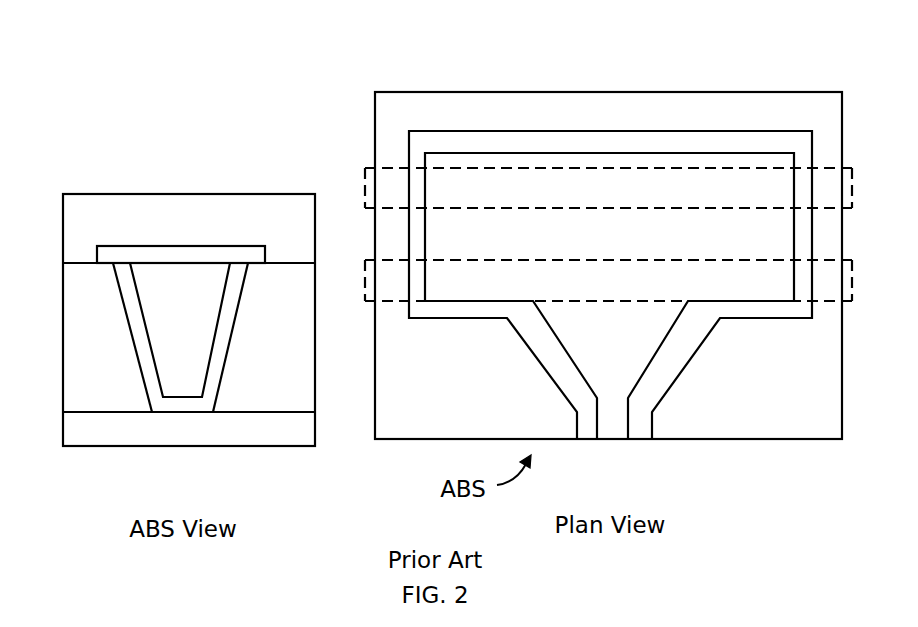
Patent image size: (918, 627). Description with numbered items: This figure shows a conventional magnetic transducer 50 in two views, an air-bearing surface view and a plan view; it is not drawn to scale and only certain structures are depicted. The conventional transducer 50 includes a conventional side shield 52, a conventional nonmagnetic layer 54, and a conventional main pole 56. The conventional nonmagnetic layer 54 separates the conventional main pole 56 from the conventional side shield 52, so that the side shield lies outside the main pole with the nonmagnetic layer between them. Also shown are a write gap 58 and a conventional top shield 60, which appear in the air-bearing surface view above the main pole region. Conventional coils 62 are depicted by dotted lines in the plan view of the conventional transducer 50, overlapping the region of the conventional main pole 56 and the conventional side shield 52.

The conventional magnetic transducer 50 is at (445, 36).
The conventional side shield 52 is at (263, 413).
The conventional nonmagnetic layer 54 is at (122, 302).
The conventional main pole 56 is at (225, 294).
The write gap 58 is at (266, 247).
The conventional top shield 60 is at (75, 194).
The conventional coils 62 is at (363, 277).